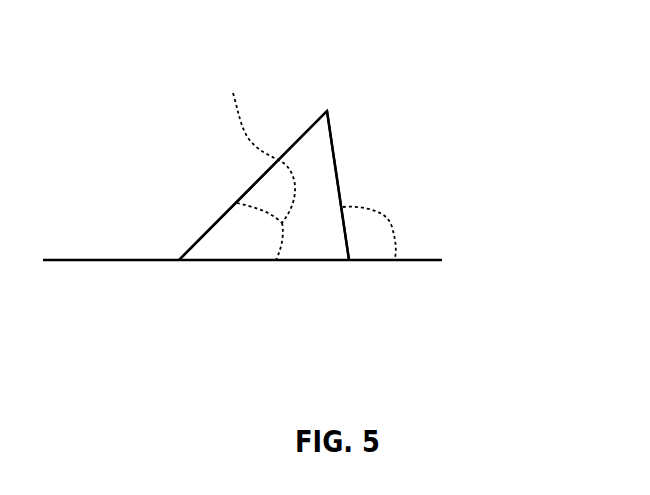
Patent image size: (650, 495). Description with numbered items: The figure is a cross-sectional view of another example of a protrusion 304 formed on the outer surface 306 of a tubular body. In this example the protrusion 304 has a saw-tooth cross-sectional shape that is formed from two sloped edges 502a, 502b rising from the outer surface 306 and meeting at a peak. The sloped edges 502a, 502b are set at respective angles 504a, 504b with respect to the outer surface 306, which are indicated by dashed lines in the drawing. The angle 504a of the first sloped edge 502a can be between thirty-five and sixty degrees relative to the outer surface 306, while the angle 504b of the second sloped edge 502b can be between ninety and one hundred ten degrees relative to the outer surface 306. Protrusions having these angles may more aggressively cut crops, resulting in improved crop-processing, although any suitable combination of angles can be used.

The protrusion 304 is at (396, 72).
The outer surface 306 is at (57, 260).
The sloped edge 502a is at (208, 228).
The sloped edge 502b is at (335, 162).
The angle 504a is at (249, 163).
The angle 504b is at (387, 218).